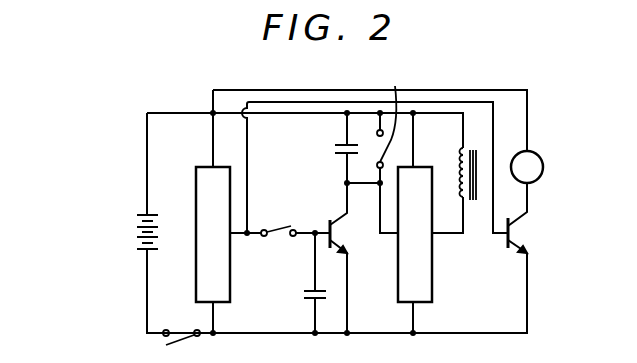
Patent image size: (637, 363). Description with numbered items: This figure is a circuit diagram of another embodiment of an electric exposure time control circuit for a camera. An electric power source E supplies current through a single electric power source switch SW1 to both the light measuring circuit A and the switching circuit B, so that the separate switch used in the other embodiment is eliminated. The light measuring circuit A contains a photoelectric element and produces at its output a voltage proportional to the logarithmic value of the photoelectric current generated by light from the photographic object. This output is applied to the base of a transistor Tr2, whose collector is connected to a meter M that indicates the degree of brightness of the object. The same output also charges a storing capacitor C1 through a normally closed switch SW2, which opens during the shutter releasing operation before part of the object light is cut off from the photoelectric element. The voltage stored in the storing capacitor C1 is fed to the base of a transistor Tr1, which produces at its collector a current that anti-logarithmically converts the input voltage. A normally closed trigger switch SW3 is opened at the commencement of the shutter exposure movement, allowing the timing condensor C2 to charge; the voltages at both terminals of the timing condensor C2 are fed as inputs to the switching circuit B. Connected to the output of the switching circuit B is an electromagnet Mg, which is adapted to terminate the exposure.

The electric power source E is at (133, 232).
The light measuring circuit A is at (213, 234).
The switching circuit B is at (415, 234).
The storing capacitor C1 is at (304, 295).
The timing condensor C2 is at (332, 155).
The electric power source switch SW1 is at (181, 326).
The normally closed switch SW2 is at (279, 220).
The trigger switch SW3 is at (395, 118).
The transistor Tr1 is at (345, 258).
The transistor Tr2 is at (524, 218).
The electromagnet Mg is at (476, 150).
The meter M is at (527, 167).